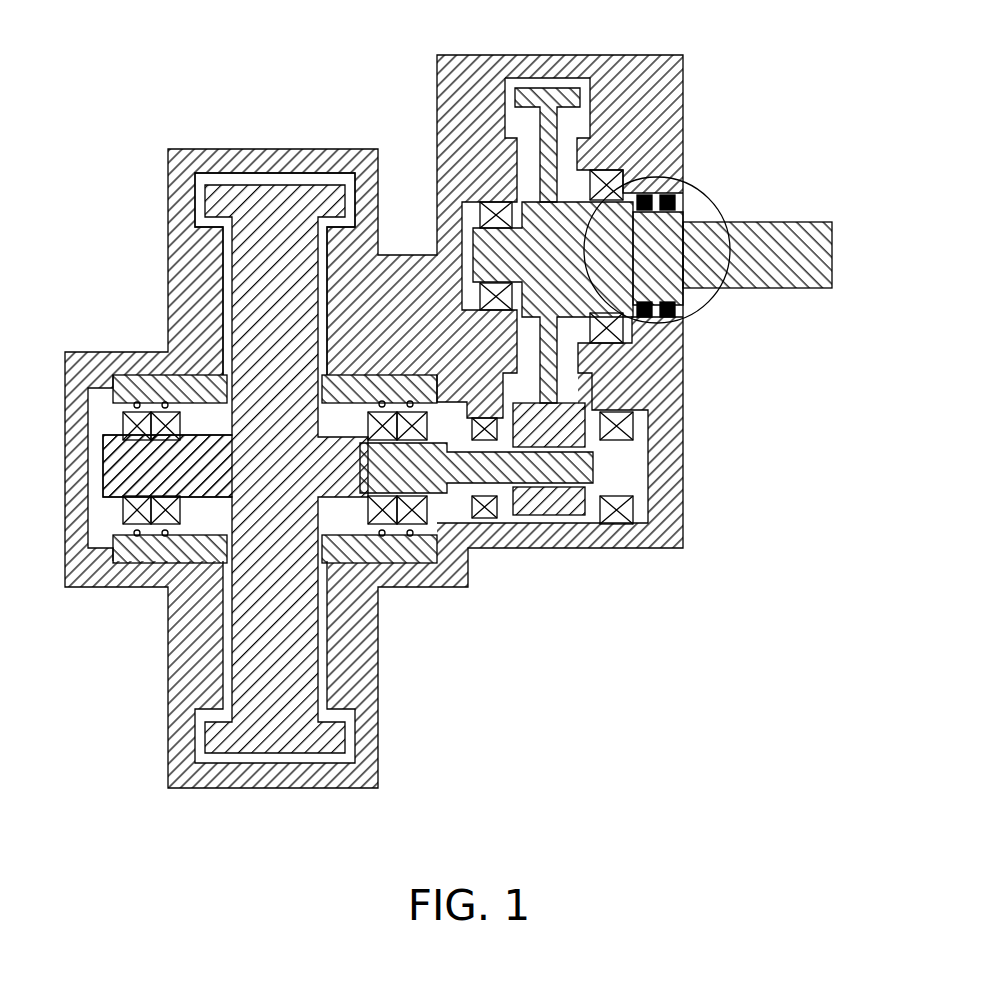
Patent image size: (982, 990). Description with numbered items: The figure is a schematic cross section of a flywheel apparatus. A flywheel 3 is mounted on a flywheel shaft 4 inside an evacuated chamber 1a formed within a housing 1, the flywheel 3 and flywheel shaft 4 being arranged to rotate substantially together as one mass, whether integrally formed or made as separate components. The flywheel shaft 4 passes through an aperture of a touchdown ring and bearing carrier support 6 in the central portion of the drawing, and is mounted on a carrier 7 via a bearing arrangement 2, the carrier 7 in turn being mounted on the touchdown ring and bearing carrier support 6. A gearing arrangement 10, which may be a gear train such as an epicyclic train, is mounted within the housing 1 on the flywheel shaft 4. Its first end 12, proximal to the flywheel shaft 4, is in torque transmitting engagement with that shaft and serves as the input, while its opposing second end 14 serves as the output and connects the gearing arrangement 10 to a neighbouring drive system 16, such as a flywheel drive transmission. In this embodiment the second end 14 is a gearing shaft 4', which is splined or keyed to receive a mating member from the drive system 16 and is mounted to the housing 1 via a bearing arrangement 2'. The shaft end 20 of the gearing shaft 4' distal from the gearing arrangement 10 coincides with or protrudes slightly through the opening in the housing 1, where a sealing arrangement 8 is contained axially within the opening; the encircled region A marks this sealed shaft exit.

The housing 1 is at (168, 149).
The evacuated chamber 1a is at (250, 180).
The bearing arrangement 2 is at (476, 351).
The bearing arrangement 2' is at (602, 320).
The flywheel 3 is at (285, 210).
The flywheel shaft 4 is at (129, 451).
The gearing shaft 4' is at (715, 297).
The touchdown ring and bearing carrier support 6 is at (350, 380).
The carrier 7 is at (423, 530).
The sealing arrangement 8 is at (660, 307).
The gearing arrangement 10 is at (562, 437).
The first end 12 is at (493, 537).
The second end 14 is at (568, 217).
The neighbouring drive system 16 is at (800, 222).
The shaft end 20 is at (683, 217).
The detail region A is at (720, 297).